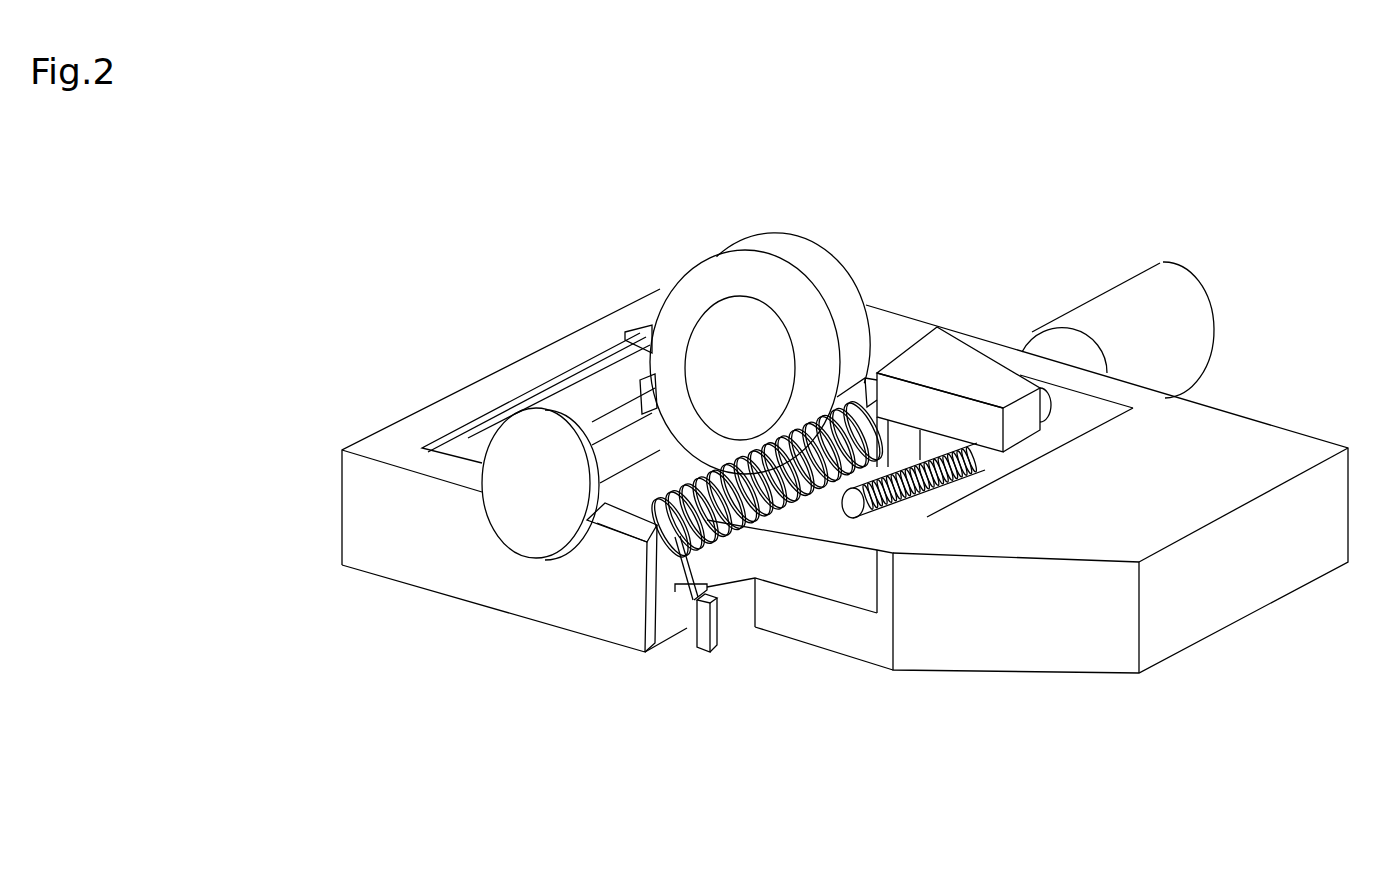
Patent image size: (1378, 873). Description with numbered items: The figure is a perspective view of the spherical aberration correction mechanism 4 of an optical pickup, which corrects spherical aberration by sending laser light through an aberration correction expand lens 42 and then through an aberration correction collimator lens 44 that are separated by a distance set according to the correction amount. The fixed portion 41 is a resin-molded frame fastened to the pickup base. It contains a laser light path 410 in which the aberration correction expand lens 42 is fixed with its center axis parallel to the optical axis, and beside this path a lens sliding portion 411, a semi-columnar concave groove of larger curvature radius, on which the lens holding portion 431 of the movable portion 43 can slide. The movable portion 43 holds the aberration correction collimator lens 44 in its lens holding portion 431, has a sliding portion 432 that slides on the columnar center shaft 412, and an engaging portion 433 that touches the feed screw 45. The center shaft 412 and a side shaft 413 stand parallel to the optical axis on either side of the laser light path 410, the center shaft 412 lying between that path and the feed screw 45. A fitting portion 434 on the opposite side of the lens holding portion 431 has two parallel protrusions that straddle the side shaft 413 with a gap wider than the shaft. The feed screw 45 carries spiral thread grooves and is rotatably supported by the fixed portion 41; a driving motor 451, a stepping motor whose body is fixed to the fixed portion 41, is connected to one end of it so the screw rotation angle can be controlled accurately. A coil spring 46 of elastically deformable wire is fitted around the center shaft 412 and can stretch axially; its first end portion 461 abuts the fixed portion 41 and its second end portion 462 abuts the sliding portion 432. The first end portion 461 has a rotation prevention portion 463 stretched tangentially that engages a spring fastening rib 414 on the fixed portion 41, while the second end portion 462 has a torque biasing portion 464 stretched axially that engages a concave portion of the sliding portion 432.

The spherical aberration correction mechanism 4 is at (432, 209).
The fixed portion 41 is at (393, 557).
The laser light path 410 is at (587, 520).
The lens sliding portion 411 is at (624, 428).
The center shaft 412 is at (741, 527).
The side shaft 413 is at (468, 438).
The spring fastening rib 414 is at (708, 652).
The aberration correction expand lens 42 is at (537, 528).
The movable portion 43 is at (776, 246).
The lens holding portion 431 is at (678, 312).
The sliding portion 432 is at (866, 404).
The engaging portion 433 is at (980, 390).
The fitting portion 434 is at (660, 400).
The aberration correction collimator lens 44 is at (747, 345).
The feed screw 45 is at (920, 487).
The driving motor 451 is at (1198, 331).
The coil spring 46 is at (780, 507).
The first end portion 461 is at (648, 538).
The second end portion 462 is at (873, 362).
The rotation prevention portion 463 is at (693, 602).
The torque biasing portion 464 is at (893, 355).